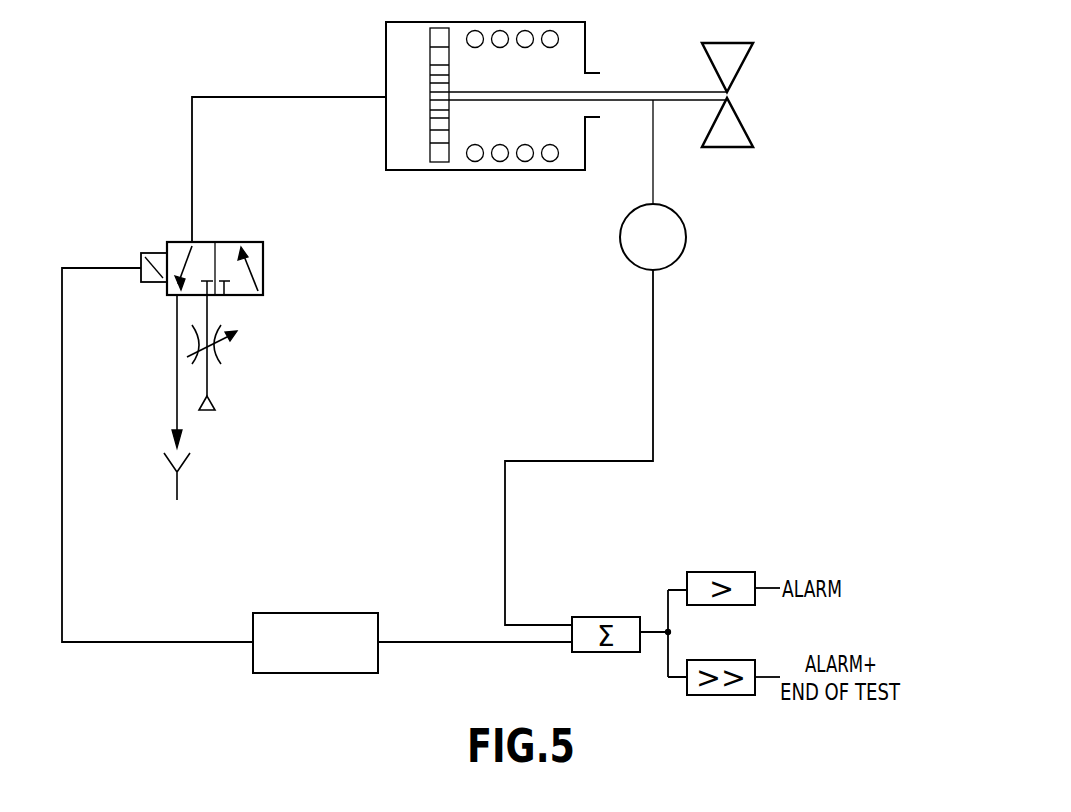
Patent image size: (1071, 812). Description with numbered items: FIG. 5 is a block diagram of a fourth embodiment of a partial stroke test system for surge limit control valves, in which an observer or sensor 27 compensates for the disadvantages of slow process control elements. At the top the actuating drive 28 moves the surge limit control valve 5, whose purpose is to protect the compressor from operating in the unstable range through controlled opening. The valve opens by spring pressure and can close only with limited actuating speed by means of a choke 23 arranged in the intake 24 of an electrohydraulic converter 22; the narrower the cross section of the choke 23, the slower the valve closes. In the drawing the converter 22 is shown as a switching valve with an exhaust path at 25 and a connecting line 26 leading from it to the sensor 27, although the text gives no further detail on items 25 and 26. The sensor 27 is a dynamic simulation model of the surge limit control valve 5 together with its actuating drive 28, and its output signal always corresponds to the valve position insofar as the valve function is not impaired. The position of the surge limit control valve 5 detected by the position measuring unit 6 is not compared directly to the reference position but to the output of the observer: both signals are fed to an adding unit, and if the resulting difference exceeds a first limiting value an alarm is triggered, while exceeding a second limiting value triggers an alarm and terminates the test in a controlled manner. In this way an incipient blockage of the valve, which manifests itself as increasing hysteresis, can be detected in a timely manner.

The surge limit control valve 5 is at (730, 148).
The position measuring unit 6 is at (674, 261).
The electrohydraulic converter 22 is at (230, 242).
The choke 23 is at (218, 354).
The intake 24 is at (214, 410).
The vent outlet 25 is at (175, 416).
The control line 26 is at (62, 556).
The sensor 27 is at (412, 643).
The actuating drive 28 is at (484, 170).